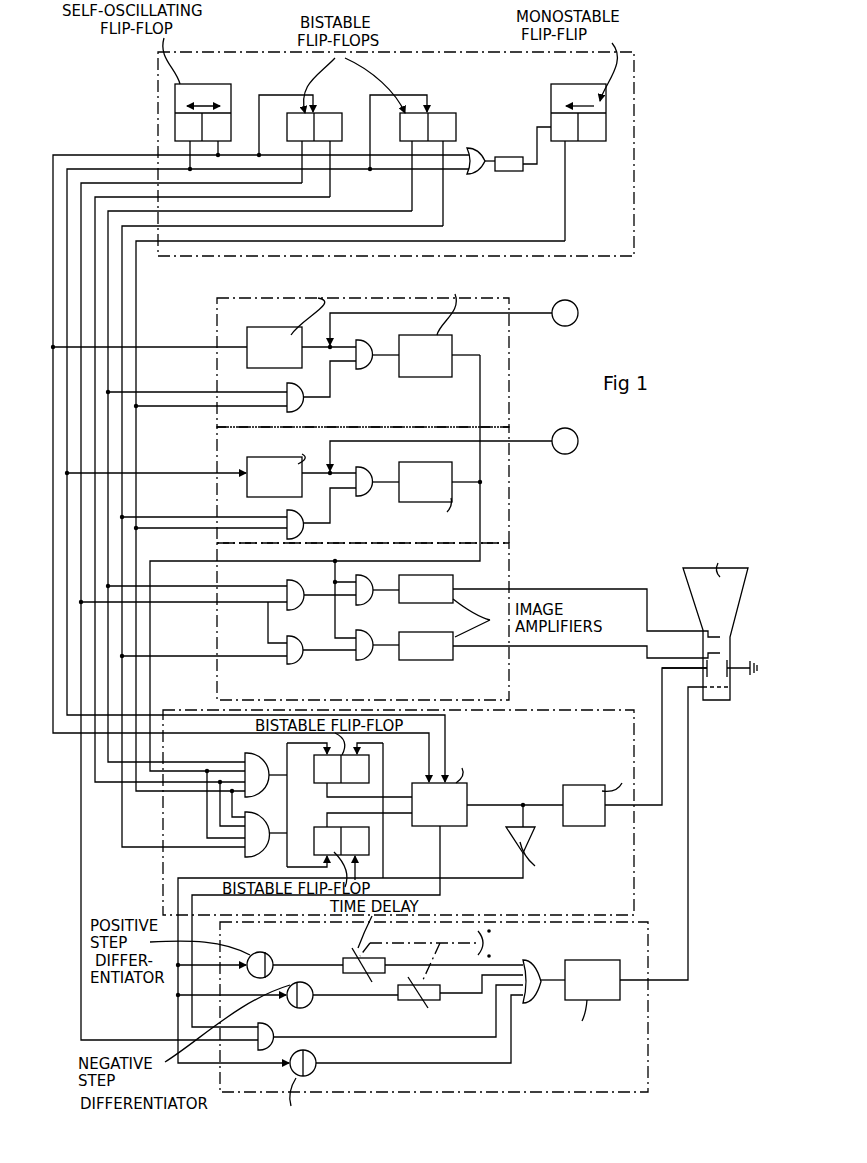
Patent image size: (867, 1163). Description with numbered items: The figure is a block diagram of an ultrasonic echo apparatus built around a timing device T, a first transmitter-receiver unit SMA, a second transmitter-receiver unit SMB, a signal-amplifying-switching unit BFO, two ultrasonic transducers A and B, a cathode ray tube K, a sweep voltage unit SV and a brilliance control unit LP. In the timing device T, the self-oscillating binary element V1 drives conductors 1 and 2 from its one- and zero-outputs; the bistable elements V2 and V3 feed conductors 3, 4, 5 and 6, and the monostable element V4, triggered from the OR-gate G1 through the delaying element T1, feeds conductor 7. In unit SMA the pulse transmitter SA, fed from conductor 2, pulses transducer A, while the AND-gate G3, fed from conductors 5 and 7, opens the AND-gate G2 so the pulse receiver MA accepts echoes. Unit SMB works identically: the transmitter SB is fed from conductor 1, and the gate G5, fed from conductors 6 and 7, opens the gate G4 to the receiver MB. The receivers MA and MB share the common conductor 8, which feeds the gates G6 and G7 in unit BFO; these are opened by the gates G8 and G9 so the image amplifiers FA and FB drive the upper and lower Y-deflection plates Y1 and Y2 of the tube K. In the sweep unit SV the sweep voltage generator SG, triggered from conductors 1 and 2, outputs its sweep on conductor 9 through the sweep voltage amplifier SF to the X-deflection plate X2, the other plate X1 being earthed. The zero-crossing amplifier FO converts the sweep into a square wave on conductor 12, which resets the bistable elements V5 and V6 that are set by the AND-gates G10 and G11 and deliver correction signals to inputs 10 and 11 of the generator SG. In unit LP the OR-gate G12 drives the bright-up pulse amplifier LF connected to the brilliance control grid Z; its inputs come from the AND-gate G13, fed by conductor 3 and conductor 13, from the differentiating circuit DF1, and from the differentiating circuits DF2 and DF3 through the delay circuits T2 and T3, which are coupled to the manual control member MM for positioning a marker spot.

The self-oscillating binary element V1 is at (229, 85).
The bistable binary element V2 is at (314, 113).
The bistable binary element V3 is at (428, 113).
The monostable binary element V4 is at (551, 104).
The OR-gate G1 is at (470, 152).
The signal delaying element T1 is at (499, 172).
The timing device T is at (634, 201).
The pulse transmitter SA is at (289, 320).
The pulse receiver MA is at (438, 326).
The AND-gate G2 is at (360, 378).
The AND-gate G3 is at (312, 414).
The first transmitter-receiver unit SMA is at (502, 382).
The ultrasonic transducer A is at (594, 303).
The pulse transmitter SB is at (289, 463).
The pulse receiver MB is at (426, 504).
The AND-gate G4 is at (365, 502).
The AND-gate G5 is at (312, 540).
The second transmitter-receiver unit SMB is at (502, 498).
The ultrasonic transducer B is at (600, 431).
The signal-amplifying-switching unit BFO is at (505, 567).
The AND-gate G6 is at (369, 586).
The AND-gate G7 is at (364, 654).
The AND-gate G8 is at (306, 585).
The AND-gate G9 is at (310, 670).
The image amplifier FA is at (551, 603).
The image amplifier FB is at (551, 646).
The cathode ray tube K is at (735, 603).
The upper Y-deflection plate Y1 is at (701, 631).
The lower Y-deflection plate Y2 is at (706, 657).
The X-deflection plate X1 is at (732, 668).
The X-deflection plate X2 is at (704, 672).
The brilliance control grid Z is at (700, 705).
The sweep voltage unit SV is at (586, 710).
The bistable binary element V5 is at (369, 769).
The bistable binary element V6 is at (369, 843).
The AND-gate G10 is at (246, 758).
The AND-gate G11 is at (244, 860).
The sweep voltage generator SG is at (477, 778).
The sweep voltage amplifier SF is at (622, 747).
The zero-crossing amplifier FO is at (529, 841).
The delay circuit T2 is at (352, 958).
The delay circuit T3 is at (431, 1002).
The manual control member MM is at (475, 943).
The differentiating circuit DF1 is at (317, 1061).
The differentiating circuit DF2 is at (272, 960).
The differentiating circuit DF3 is at (313, 1003).
The OR-gate G12 is at (538, 956).
The AND-gate G13 is at (283, 1026).
The bright-up pulse amplifier LF is at (595, 1018).
The brilliance control unit LP is at (649, 1022).
The conductor 1 is at (267, 468).
The conductor 2 is at (260, 461).
The conductor 3 is at (190, 605).
The conductor 4 is at (212, 504).
The conductor 5 is at (259, 480).
The conductor 6 is at (281, 529).
The conductor 7 is at (349, 522).
The common conductor 8 is at (321, 596).
The output conductor 9 is at (515, 798).
The correction input 10 is at (369, 790).
The correction input 11 is at (369, 814).
The conductor 12 is at (349, 903).
The conductor 13 is at (441, 852).